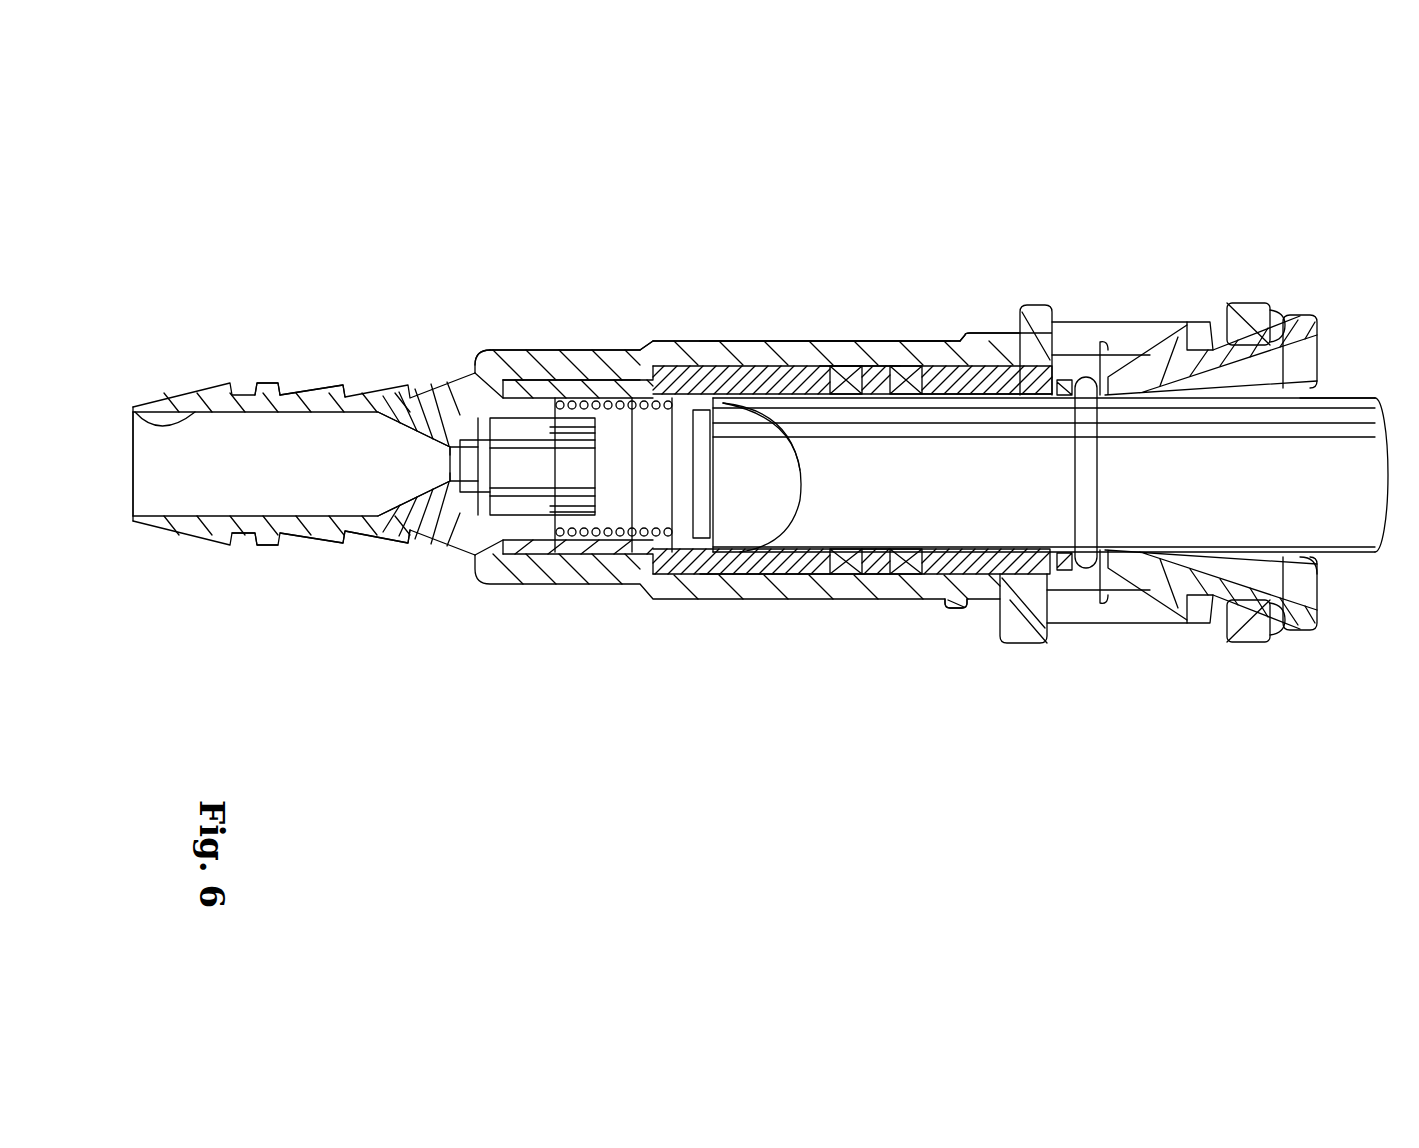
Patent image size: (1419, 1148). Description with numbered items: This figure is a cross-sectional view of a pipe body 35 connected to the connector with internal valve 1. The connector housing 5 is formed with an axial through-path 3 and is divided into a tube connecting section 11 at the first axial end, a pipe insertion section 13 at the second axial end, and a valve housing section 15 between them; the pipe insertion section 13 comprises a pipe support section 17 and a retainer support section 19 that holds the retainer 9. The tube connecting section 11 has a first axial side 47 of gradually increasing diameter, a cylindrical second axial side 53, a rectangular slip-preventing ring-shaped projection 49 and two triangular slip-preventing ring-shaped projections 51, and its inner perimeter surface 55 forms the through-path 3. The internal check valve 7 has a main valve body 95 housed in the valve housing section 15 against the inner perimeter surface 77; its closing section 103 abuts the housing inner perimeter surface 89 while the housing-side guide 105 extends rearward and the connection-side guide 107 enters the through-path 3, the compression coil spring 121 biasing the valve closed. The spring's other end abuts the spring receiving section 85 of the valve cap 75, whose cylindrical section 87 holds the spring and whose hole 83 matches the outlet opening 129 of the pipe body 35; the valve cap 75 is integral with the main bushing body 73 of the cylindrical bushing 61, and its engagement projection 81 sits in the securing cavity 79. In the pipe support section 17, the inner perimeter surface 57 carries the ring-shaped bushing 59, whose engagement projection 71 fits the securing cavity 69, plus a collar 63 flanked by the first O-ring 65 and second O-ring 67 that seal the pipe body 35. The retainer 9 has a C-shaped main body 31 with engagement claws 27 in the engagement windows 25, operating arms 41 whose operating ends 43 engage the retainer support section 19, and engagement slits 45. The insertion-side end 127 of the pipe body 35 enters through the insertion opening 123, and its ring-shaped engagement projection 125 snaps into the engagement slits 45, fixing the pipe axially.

The connector with internal valve 1 is at (443, 320).
The through-path 3 is at (187, 473).
The connector housing 5 is at (778, 292).
The internal check valve 7 is at (568, 365).
The retainer 9 is at (1317, 377).
The tube connecting section 11 is at (293, 337).
The pipe insertion section 13 is at (1178, 413).
The valve housing section 15 is at (541, 350).
The pipe support section 17 is at (812, 345).
The retainer support section 19 is at (1235, 318).
The engagement windows 25 is at (1150, 322).
The engagement claws 27 is at (1192, 340).
The main body 31 is at (1140, 602).
The pipe body 35 is at (1343, 372).
The operating arms 41 is at (1248, 322).
The operating ends 43 is at (1298, 372).
The engagement slits 45 is at (1085, 378).
The first axial side 47 is at (215, 388).
The slip-preventing ring-shaped projection 49 is at (257, 545).
The slip-preventing ring-shaped projections 51 is at (345, 542).
The second axial side 53 is at (377, 357).
The inner perimeter surface 55 is at (137, 412).
The inner perimeter surface 57 is at (980, 467).
The ring-shaped bushing 59 is at (978, 289).
The cylindrical bushing 61 is at (712, 360).
The collar 63 is at (888, 575).
The first O-ring 65 is at (915, 565).
The second O-ring 67 is at (838, 572).
The securing cavity 69 is at (1000, 600).
The engagement projection 71 is at (1035, 328).
The main bushing body 73 is at (780, 580).
The valve cap 75 is at (636, 562).
The inner perimeter surface 77 is at (590, 562).
The securing cavity 79 is at (700, 560).
The engagement projection 81 is at (655, 345).
The hole 83 is at (640, 462).
The spring receiving section 85 is at (725, 535).
The cylindrical section 87 is at (640, 398).
The housing inner perimeter surface 89 is at (497, 372).
The main valve body 95 is at (389, 497).
The closing section 103 is at (478, 548).
The housing-side guide 105 is at (521, 560).
The connection-side guide 107 is at (364, 444).
The compression coil spring 121 is at (605, 396).
The insertion opening 123 is at (1295, 562).
The ring-shaped engagement projection 125 is at (1095, 500).
The insertion-side end 127 is at (850, 362).
The outlet opening 129 is at (750, 452).